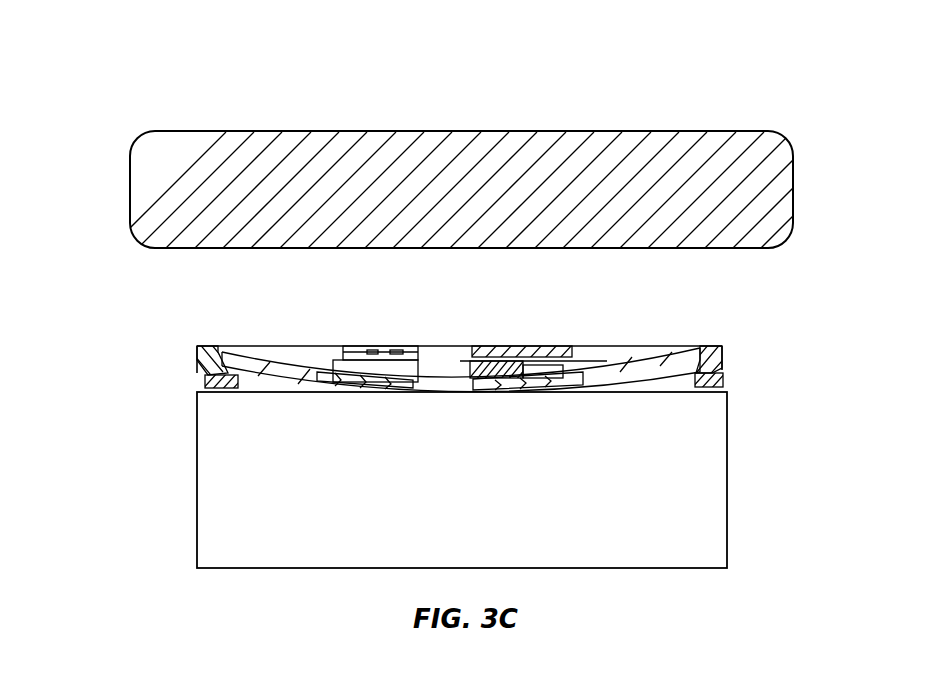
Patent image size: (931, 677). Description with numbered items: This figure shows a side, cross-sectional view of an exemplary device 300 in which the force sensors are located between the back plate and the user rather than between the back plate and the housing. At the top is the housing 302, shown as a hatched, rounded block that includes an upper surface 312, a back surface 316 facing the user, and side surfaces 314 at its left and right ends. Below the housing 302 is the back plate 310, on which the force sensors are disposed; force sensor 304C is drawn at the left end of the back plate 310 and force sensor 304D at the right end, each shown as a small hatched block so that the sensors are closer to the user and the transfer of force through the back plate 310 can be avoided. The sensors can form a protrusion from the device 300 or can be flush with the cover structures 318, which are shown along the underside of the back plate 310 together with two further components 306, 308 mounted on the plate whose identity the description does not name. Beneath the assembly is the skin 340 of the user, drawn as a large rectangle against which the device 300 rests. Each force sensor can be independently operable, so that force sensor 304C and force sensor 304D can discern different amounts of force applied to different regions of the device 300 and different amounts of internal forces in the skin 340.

The device 300 is at (101, 78).
The housing 302 is at (175, 131).
The upper surface 312 is at (755, 131).
The side surfaces 314 is at (130, 190).
The back surface 316 is at (629, 252).
The light emitter 306 is at (397, 348).
The light detector 308 is at (495, 361).
The cover structures 318 is at (320, 375).
The back plate 310 is at (195, 372).
The force sensor 304C is at (205, 381).
The force sensor 304D is at (723, 380).
The skin 340 is at (478, 490).